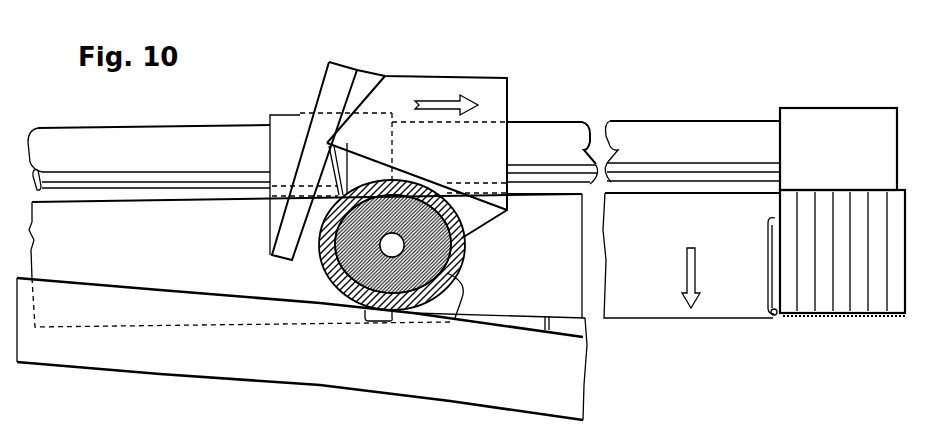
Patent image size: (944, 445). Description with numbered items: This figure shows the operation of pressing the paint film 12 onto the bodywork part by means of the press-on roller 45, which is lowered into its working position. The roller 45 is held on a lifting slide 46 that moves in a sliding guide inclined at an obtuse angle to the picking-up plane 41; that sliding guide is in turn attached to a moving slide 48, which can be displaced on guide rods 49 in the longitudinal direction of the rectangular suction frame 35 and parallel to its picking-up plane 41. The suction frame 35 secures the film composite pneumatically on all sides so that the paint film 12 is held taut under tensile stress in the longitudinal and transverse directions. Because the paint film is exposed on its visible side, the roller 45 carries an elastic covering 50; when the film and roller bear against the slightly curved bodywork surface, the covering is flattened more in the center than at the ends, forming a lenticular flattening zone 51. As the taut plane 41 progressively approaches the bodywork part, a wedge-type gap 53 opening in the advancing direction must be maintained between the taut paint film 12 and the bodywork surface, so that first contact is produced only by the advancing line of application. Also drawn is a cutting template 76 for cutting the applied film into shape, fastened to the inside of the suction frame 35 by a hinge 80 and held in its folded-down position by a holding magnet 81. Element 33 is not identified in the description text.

The paint film 12 is at (620, 318).
The guide rail 33 is at (724, 116).
The suction frame 35 is at (660, 260).
The picking-up plane 41 is at (192, 327).
The press-on roller 45 is at (323, 276).
The lifting slide 46 is at (432, 92).
The moving slide 48 is at (288, 132).
The guide rods 49 is at (528, 145).
The elastic covering 50 is at (457, 317).
The flattening zone 51 is at (382, 320).
The wedge-type gap 53 is at (550, 333).
The cutting template 76 is at (770, 252).
The hinge 80 is at (775, 316).
The holding magnet 81 is at (773, 216).